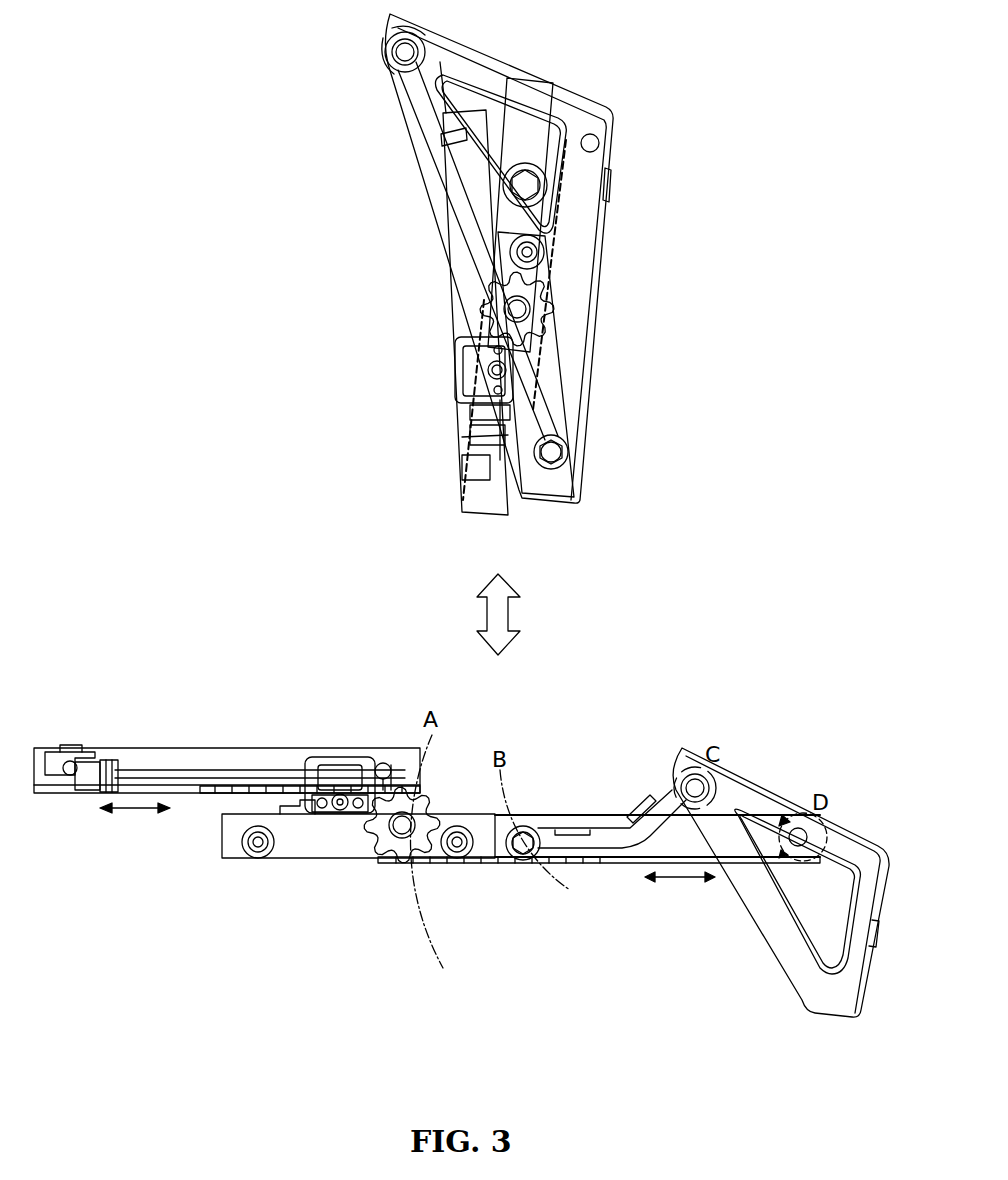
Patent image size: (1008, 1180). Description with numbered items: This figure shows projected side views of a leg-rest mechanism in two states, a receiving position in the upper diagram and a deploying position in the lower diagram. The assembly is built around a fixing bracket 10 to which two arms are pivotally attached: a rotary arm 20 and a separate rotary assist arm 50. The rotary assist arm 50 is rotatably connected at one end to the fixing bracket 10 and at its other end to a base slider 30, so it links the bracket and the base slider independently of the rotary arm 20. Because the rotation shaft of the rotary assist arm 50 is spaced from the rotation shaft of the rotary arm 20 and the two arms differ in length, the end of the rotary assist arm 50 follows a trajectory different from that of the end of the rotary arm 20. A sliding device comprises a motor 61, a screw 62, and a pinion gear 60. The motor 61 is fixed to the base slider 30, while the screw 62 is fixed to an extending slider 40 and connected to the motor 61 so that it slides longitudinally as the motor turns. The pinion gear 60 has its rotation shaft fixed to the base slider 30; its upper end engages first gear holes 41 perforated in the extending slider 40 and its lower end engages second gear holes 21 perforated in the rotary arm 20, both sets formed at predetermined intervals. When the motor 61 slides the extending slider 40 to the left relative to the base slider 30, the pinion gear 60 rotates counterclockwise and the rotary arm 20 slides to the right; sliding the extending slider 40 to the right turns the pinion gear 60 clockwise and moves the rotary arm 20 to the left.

The fixing bracket 10 is at (788, 932).
The rotary arm 20 is at (625, 866).
The second gear holes 21 is at (462, 862).
The base slider 30 is at (298, 860).
The extending slider 40 is at (145, 752).
The first gear holes 41 is at (256, 786).
The rotary assist arm 50 is at (655, 810).
The pinion gear 60 is at (432, 798).
The motor 61 is at (330, 768).
The screw 62 is at (180, 772).